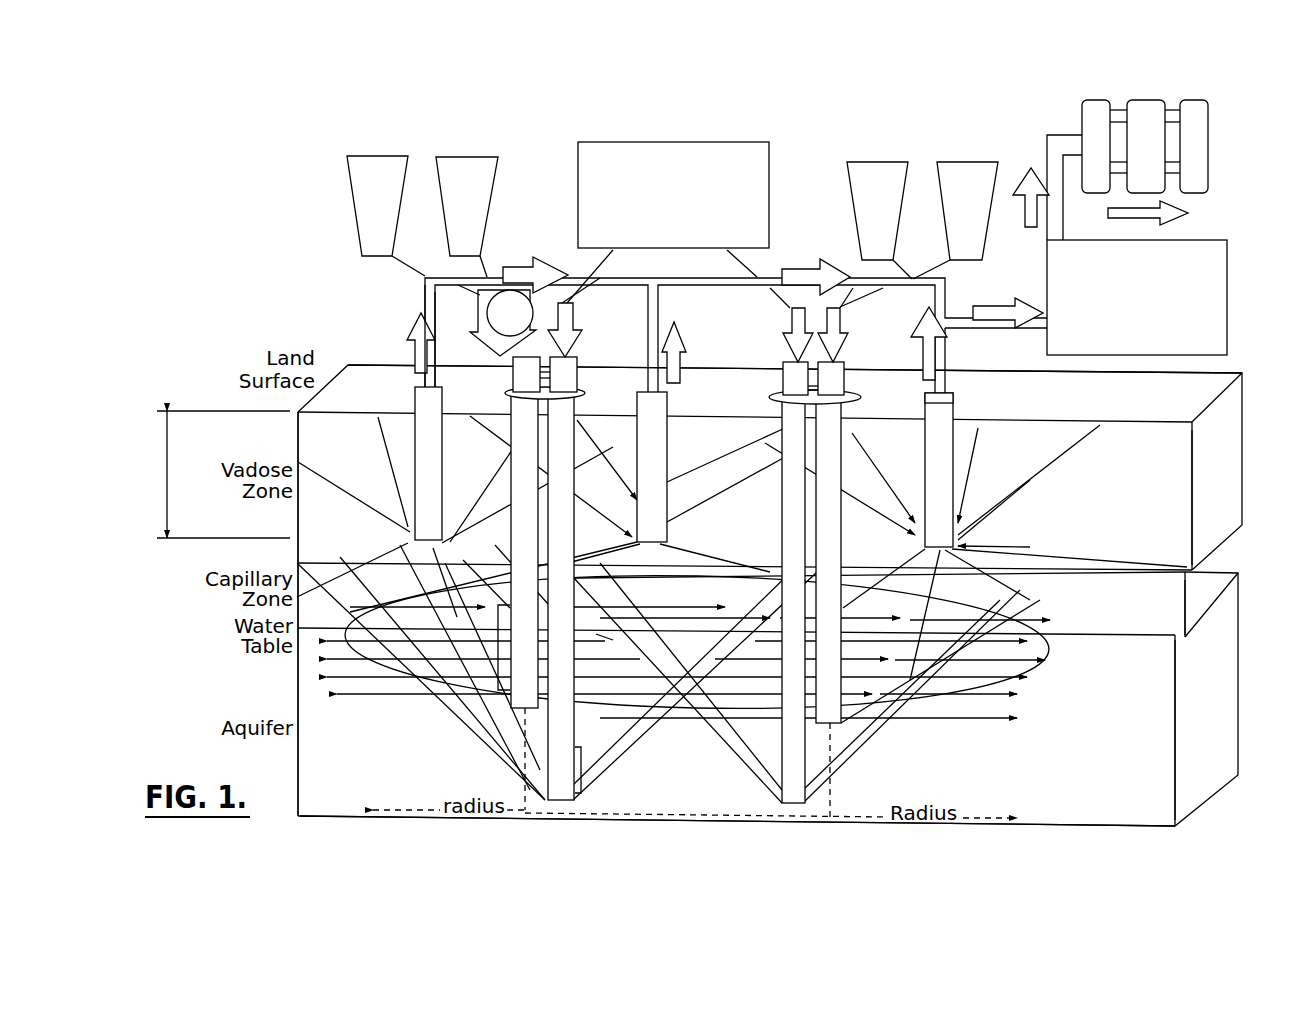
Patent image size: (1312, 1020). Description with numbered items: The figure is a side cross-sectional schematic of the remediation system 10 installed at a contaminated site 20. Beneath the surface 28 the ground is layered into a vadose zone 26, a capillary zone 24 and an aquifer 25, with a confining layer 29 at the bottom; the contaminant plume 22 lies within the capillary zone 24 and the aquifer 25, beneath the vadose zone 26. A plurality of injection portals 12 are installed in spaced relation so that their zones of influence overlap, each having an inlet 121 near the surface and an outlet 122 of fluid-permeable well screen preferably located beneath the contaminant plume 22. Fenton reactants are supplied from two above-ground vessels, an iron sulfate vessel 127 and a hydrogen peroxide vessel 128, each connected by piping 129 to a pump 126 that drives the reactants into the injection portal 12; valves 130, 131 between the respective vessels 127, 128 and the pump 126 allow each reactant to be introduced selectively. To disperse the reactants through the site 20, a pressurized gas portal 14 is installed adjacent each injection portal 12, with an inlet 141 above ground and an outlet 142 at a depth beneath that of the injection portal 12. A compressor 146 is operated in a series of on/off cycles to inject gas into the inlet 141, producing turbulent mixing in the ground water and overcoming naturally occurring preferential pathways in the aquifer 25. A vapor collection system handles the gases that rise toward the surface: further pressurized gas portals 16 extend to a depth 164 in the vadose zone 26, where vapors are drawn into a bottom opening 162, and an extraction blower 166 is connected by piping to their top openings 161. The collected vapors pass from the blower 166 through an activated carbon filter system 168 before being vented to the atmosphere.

The remediation system 10 is at (283, 297).
The injection portal 12 is at (515, 362).
The pressurized gas portal 14 is at (577, 376).
The pressurized gas portal 16 is at (927, 395).
The site 20 is at (1240, 540).
The contaminant plume 22 is at (1000, 670).
The capillary zone 24 is at (1187, 598).
The aquifer 25 is at (1222, 718).
The vadose zone 26 is at (1225, 495).
The surface 28 is at (1205, 385).
The confining layer 29 is at (1157, 824).
The inlet 121 is at (516, 357).
The outlet 122 is at (445, 695).
The pump 126 is at (497, 320).
The iron sulfate vessel 127 is at (470, 156).
The hydrogen peroxide vessel 128 is at (378, 156).
The piping 129 is at (424, 275).
The valve 130 is at (482, 276).
The valve 131 is at (420, 248).
The inlet 141 is at (568, 354).
The outlet 142 is at (582, 770).
The compressor 146 is at (640, 140).
The top opening 161 is at (950, 392).
The bottom opening 162 is at (410, 537).
The depth 164 is at (216, 474).
The extraction blower 166 is at (1228, 292).
The activated carbon filter system 168 is at (1150, 98).